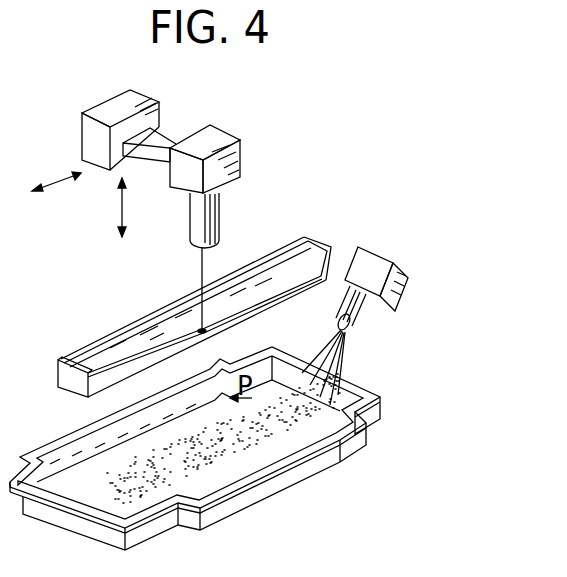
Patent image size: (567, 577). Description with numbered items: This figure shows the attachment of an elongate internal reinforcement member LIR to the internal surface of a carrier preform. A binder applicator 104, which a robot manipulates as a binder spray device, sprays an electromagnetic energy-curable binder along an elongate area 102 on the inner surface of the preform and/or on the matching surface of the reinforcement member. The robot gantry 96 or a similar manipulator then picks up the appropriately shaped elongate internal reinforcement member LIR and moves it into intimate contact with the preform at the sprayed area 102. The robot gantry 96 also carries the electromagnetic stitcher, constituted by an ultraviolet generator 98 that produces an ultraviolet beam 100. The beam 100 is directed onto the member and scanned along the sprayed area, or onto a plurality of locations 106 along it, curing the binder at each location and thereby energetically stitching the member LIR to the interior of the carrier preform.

The robot gantry 96 is at (175, 140).
The ultraviolet generator 98 is at (200, 217).
The ultraviolet beam 100 is at (202, 270).
The sprayed area 102 is at (165, 488).
The binder applicator 104 is at (401, 285).
The stitching locations 106 is at (199, 329).
The elongate internal reinforcement member LIR is at (85, 384).